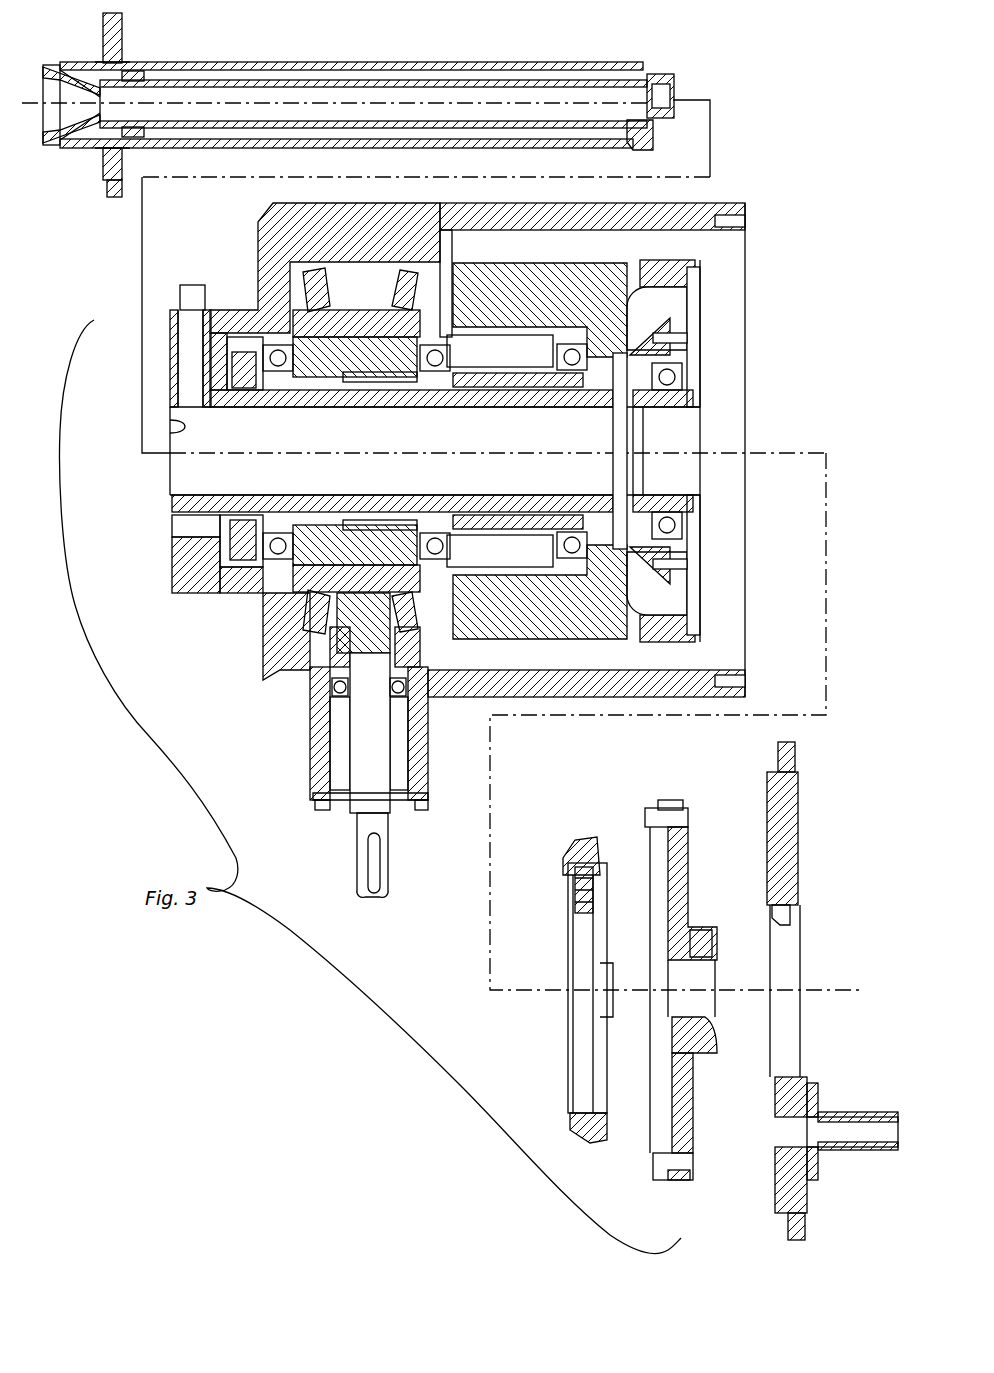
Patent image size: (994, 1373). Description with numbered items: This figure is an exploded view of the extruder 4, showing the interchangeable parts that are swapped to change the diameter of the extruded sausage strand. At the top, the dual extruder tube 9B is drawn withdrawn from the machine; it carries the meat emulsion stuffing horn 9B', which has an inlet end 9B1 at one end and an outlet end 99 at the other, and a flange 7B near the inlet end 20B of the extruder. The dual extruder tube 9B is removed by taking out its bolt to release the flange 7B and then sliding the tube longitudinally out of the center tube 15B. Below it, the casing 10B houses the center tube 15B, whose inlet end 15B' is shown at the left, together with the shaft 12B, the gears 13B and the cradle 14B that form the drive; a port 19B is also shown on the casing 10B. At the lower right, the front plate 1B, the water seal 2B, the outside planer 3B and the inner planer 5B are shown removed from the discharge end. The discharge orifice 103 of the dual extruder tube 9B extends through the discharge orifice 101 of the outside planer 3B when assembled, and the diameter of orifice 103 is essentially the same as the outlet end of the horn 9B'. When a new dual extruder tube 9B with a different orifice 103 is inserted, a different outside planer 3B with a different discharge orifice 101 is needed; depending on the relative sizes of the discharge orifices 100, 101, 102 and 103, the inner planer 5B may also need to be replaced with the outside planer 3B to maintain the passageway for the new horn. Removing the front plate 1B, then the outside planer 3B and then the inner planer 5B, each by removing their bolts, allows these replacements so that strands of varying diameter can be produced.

The front plate 1B is at (798, 898).
The water seal 2B is at (798, 783).
The outside planer 3B is at (688, 887).
The extruder 4 is at (752, 258).
The inner planer 5B is at (572, 923).
The flange 7B is at (118, 36).
The dual extruder tube 9B is at (351, 76).
The horn 9B' is at (373, 76).
The inlet end 9B1 is at (118, 107).
The casing 10B is at (745, 230).
The shaft 12B is at (363, 742).
The gears 13B is at (265, 652).
The cradle 14B is at (643, 258).
The tube 15B is at (401, 455).
The inlet end 15B' is at (136, 426).
The port 19B is at (197, 290).
The inlet end 20B is at (137, 78).
The outlet end 99 is at (640, 112).
The discharge orifice 100 is at (605, 985).
The discharge orifice 101 is at (712, 960).
The discharge orifice 102 is at (797, 963).
The discharge orifice 103 is at (673, 92).